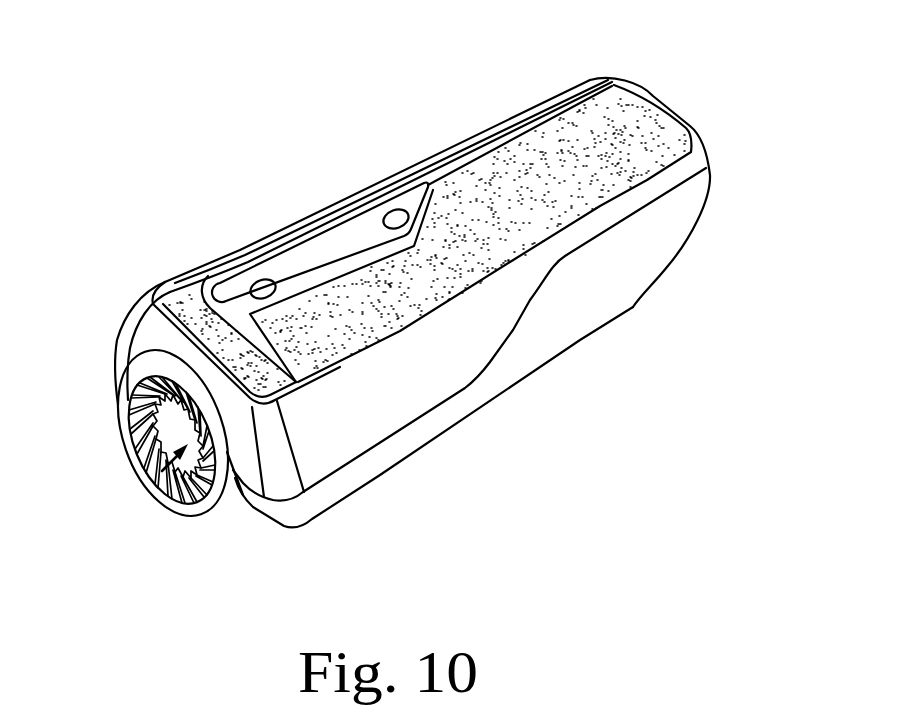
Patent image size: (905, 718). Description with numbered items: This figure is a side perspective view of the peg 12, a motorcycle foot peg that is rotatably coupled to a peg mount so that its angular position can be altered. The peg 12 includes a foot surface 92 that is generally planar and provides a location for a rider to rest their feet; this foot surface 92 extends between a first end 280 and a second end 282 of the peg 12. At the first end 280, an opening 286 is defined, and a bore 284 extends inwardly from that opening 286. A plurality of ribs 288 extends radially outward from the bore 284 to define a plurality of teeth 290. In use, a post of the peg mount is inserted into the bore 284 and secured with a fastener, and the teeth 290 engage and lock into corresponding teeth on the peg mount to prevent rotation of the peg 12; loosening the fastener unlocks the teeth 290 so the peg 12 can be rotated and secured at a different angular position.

The peg 12 is at (329, 175).
The foot surface 92 is at (502, 163).
The first end 280 is at (179, 519).
The second end 282 is at (697, 95).
The bore 284 is at (150, 431).
The opening 286 is at (162, 471).
The ribs 288 is at (143, 393).
The teeth 290 is at (196, 514).